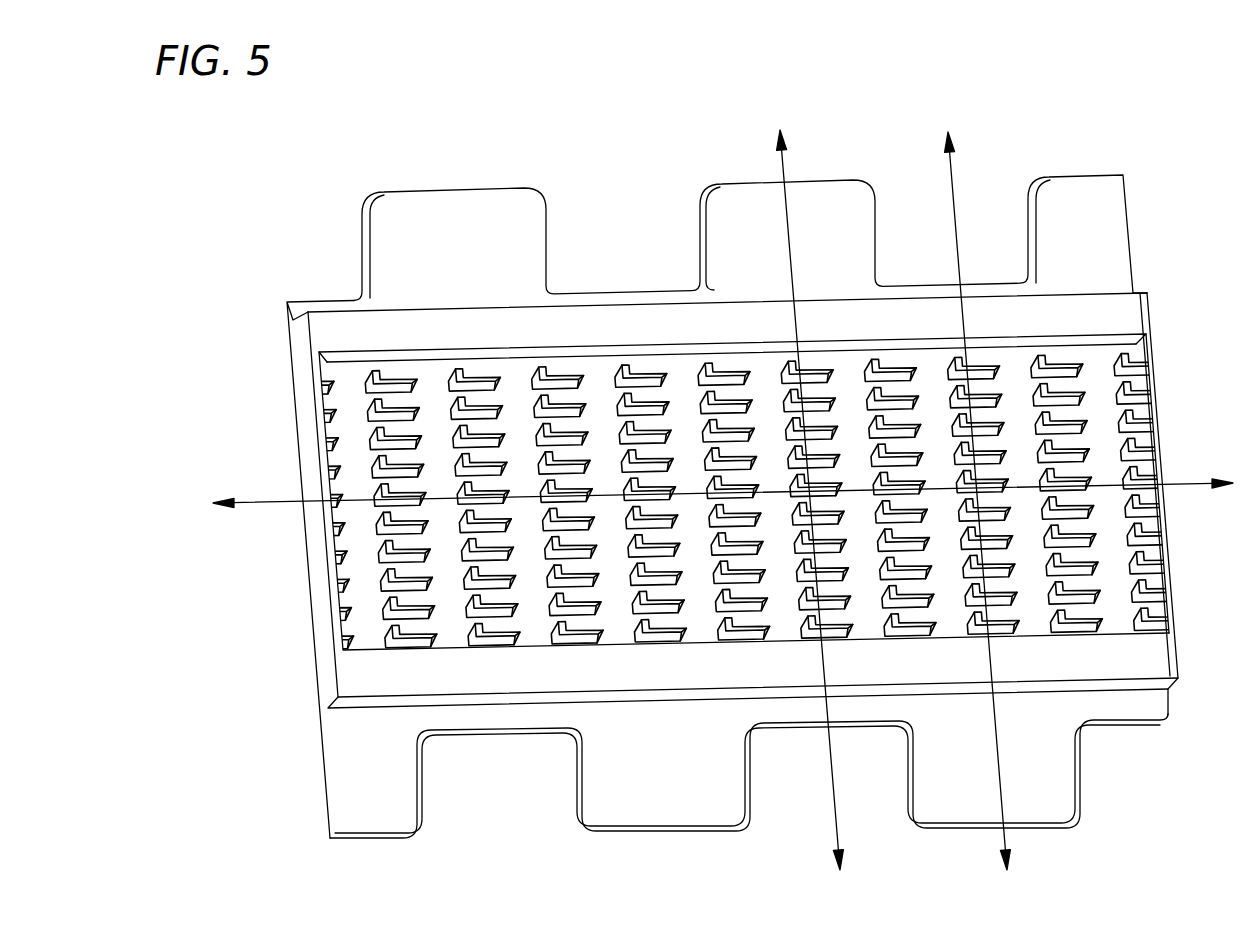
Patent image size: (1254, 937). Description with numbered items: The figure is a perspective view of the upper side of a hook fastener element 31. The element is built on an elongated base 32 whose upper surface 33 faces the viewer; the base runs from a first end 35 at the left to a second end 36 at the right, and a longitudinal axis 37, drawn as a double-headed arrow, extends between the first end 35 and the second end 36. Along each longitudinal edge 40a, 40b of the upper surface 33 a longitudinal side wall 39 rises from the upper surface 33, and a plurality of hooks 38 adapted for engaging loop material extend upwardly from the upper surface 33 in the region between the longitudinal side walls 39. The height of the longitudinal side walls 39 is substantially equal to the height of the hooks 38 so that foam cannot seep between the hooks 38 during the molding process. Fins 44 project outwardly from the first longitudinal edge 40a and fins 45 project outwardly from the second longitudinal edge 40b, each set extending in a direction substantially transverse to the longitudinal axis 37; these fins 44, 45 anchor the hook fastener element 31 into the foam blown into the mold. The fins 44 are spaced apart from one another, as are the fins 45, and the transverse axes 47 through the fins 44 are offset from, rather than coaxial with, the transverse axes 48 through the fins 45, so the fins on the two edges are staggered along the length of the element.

The hook fastener element 31 is at (1096, 131).
The elongated base 32 is at (300, 377).
The upper surface 33 is at (1120, 605).
The first end 35 is at (311, 548).
The second end 36 is at (1152, 300).
The longitudinal axis 37 is at (1188, 483).
The hooks 38 is at (660, 373).
The longitudinal side walls 39 is at (451, 332).
The first longitudinal edge 40a is at (914, 345).
The second longitudinal edge 40b is at (875, 643).
The fins 44 is at (843, 218).
The fins 45 is at (678, 787).
The transverse axes 47 is at (781, 172).
The transverse axes 48 is at (1006, 838).